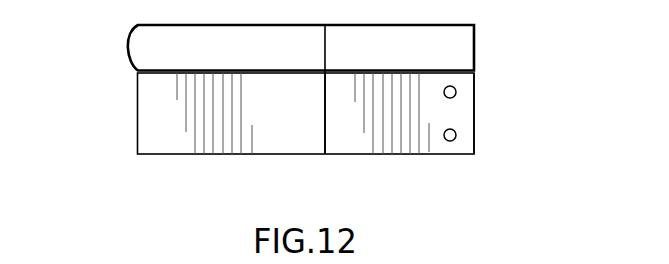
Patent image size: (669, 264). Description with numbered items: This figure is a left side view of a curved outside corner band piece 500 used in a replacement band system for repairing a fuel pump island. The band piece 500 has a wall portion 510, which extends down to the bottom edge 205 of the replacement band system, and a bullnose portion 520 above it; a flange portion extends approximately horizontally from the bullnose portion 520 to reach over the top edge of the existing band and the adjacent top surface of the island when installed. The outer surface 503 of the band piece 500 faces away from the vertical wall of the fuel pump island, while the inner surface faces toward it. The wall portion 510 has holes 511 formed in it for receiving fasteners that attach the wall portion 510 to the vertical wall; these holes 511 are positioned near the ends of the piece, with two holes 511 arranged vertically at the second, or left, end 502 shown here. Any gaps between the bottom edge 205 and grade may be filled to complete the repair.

The bullnose portion 520 is at (122, 50).
The wall portion 510 is at (150, 116).
The outer surface 503 is at (198, 137).
The curved outside corner band piece 500 is at (267, 130).
The bottom edge 205 is at (388, 152).
The holes 511 is at (458, 135).
The second end 502 is at (488, 142).